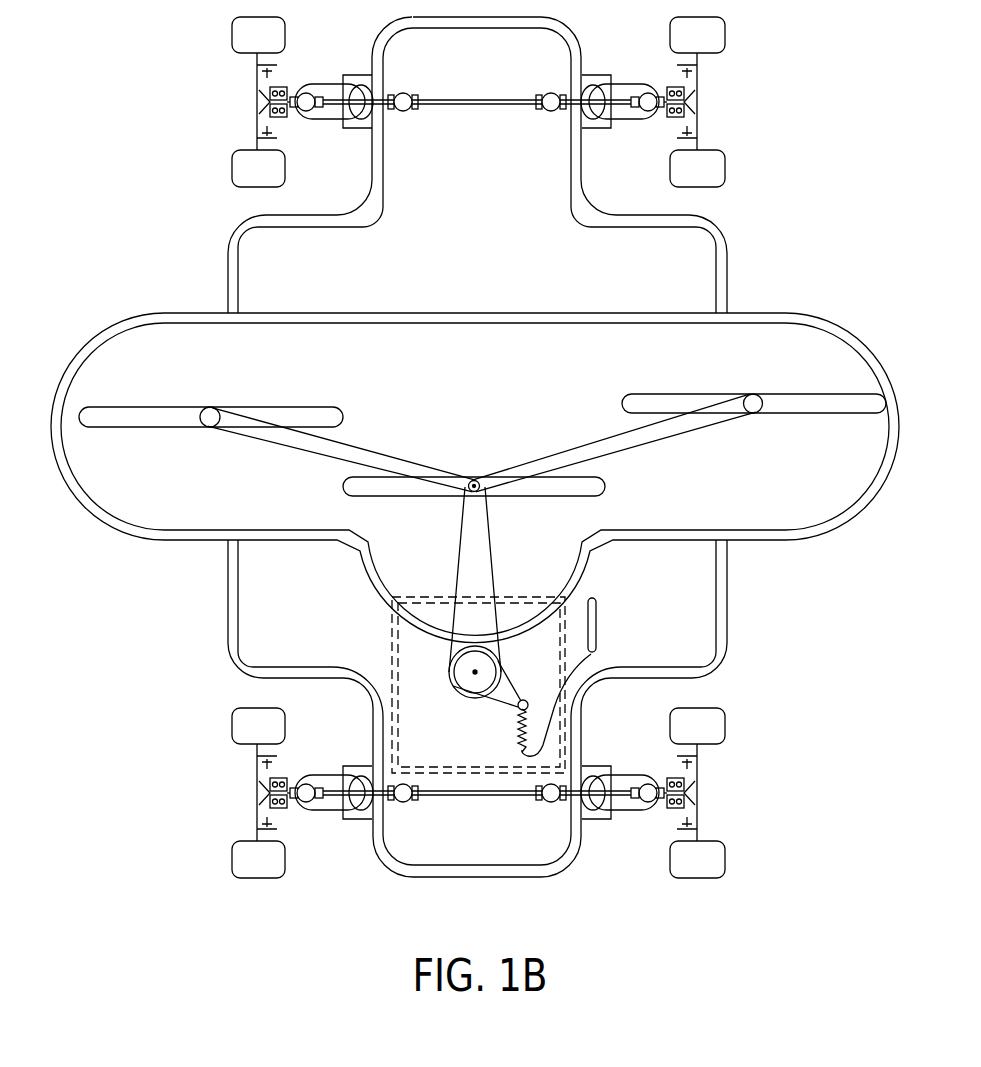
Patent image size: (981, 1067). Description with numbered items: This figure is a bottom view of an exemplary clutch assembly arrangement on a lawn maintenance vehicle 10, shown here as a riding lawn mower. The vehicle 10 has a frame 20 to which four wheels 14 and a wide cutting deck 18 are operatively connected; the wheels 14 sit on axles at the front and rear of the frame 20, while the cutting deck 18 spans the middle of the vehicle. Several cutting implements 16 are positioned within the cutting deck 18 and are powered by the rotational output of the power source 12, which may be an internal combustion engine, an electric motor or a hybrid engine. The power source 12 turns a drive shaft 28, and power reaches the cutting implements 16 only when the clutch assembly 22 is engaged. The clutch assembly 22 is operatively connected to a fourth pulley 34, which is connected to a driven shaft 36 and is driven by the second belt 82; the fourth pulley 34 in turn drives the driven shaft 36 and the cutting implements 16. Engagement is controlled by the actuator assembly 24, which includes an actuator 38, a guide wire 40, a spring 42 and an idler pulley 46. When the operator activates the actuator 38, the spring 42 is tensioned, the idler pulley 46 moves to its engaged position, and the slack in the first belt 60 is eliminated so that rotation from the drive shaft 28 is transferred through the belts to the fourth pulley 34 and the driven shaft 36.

The lawn maintenance vehicle 10 is at (162, 232).
The power source 12 is at (421, 716).
The wheels 14 is at (705, 170).
The cutting implements 16 is at (314, 418).
The cutting deck 18 is at (767, 313).
The frame 20 is at (718, 262).
The clutch assembly 22 is at (418, 658).
The actuator assembly 24 is at (585, 686).
The drive shaft 28 is at (474, 673).
The fourth pulley 34 is at (473, 480).
The driven shaft 36 is at (480, 493).
The actuator 38 is at (596, 622).
The guide wire 40 is at (588, 665).
The spring 42 is at (505, 737).
The idler pulley 46 is at (524, 700).
The first belt 60 is at (492, 703).
The second belt 82 is at (492, 565).